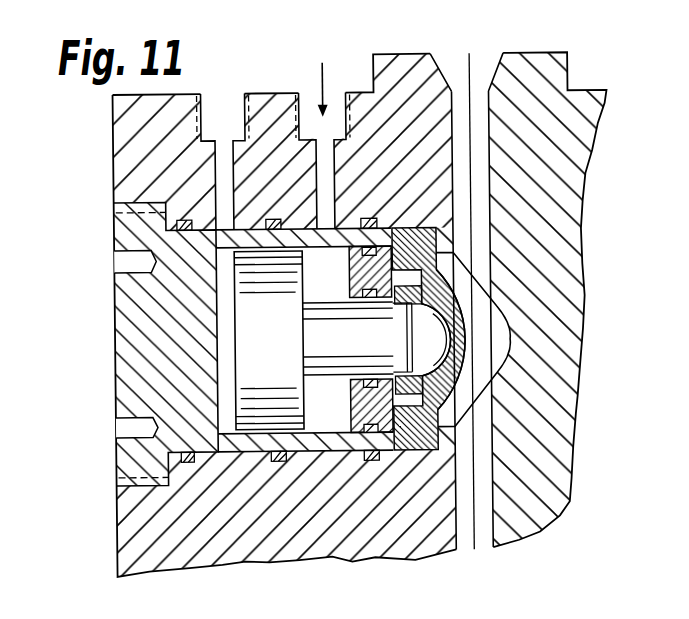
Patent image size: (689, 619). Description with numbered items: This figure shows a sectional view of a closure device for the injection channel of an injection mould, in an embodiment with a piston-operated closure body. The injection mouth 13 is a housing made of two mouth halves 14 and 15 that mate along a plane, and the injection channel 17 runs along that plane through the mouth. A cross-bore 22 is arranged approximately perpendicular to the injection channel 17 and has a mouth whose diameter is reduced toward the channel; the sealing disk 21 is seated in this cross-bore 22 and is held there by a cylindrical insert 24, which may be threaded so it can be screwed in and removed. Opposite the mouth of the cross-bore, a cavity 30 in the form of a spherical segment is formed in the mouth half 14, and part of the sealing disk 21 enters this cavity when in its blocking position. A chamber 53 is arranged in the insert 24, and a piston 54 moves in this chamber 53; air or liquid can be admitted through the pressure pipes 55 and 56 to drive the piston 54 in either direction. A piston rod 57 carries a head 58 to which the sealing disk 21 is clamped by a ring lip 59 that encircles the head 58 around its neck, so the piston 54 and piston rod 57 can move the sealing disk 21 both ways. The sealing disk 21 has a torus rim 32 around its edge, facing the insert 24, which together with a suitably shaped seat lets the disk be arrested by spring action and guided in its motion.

The injection mouth 13 is at (83, 378).
The mouth half 14 is at (393, 83).
The mouth half 15 is at (577, 133).
The injection channel 17 is at (477, 110).
The sealing disk 21 is at (432, 277).
The cross-bore 22 is at (217, 452).
The insert 24 is at (117, 402).
The cavity 30 is at (508, 320).
The torus rim 32 is at (418, 437).
The chamber 53 is at (225, 319).
The piston 54 is at (263, 412).
The pressure pipe 55 is at (222, 107).
The pressure pipe 56 is at (312, 97).
The piston rod 57 is at (345, 350).
The head 58 is at (433, 338).
The ring lip 59 is at (440, 292).